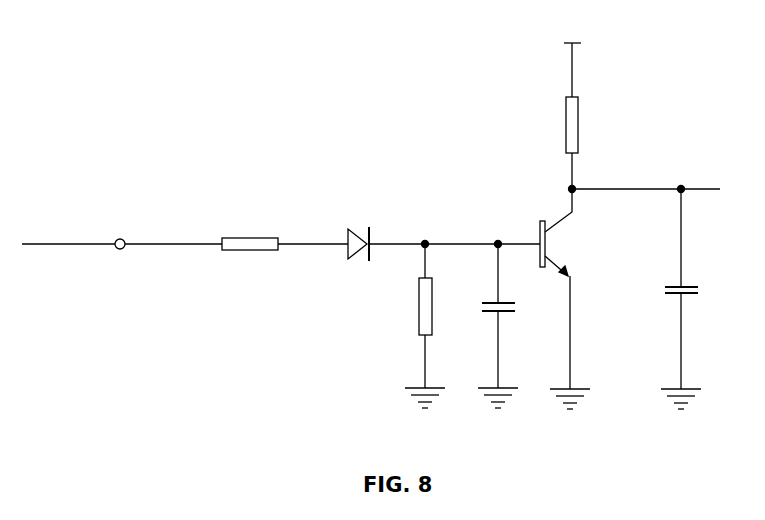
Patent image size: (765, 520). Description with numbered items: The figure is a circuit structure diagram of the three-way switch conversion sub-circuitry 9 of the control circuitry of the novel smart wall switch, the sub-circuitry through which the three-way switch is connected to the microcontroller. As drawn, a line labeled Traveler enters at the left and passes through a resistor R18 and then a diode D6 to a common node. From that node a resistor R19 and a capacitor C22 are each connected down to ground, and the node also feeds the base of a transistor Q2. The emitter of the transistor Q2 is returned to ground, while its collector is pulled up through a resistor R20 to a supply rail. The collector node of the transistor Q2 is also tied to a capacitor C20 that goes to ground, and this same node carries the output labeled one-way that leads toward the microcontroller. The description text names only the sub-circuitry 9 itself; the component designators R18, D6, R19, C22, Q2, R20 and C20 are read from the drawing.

The three-way switch conversion sub-circuitry 9 is at (364, 44).
The resistor 330K R18 is at (250, 244).
The diode M7 D6 is at (351, 245).
The resistor 200K R19 is at (434, 326).
The capacitor 1nF C22 is at (509, 326).
The transistor BC847C Q2 is at (583, 299).
The resistor 10K R20 is at (639, 110).
The capacitor 10nF C20 is at (694, 299).